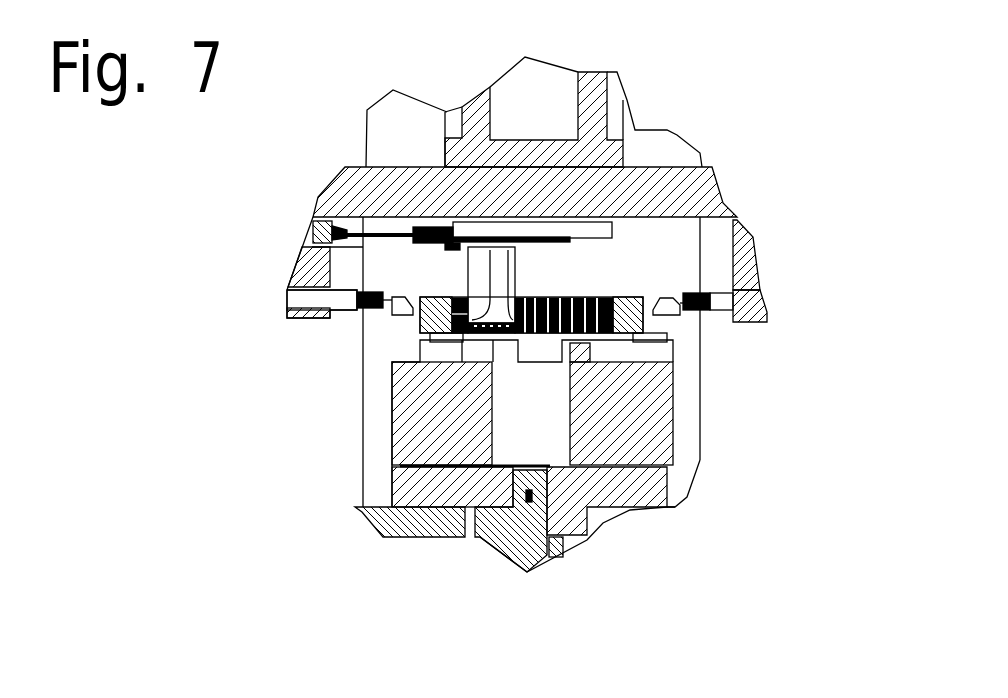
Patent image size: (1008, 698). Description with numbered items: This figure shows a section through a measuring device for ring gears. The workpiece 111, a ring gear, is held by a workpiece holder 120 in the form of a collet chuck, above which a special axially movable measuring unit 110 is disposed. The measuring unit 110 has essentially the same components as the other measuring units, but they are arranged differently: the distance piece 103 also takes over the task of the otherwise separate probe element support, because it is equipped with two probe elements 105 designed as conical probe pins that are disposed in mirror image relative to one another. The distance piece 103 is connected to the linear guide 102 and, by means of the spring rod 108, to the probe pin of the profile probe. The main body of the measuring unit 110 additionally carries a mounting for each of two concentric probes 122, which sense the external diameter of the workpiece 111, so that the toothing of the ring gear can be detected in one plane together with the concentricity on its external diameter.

The linear guide 102 is at (548, 123).
The distance piece 103 is at (573, 435).
The probe element 105 is at (510, 459).
The spring rod 108 is at (438, 127).
The measuring unit 110 is at (365, 123).
The workpiece 111 is at (342, 457).
The workpiece holder 120 is at (578, 481).
The concentric probe 122 is at (267, 451).